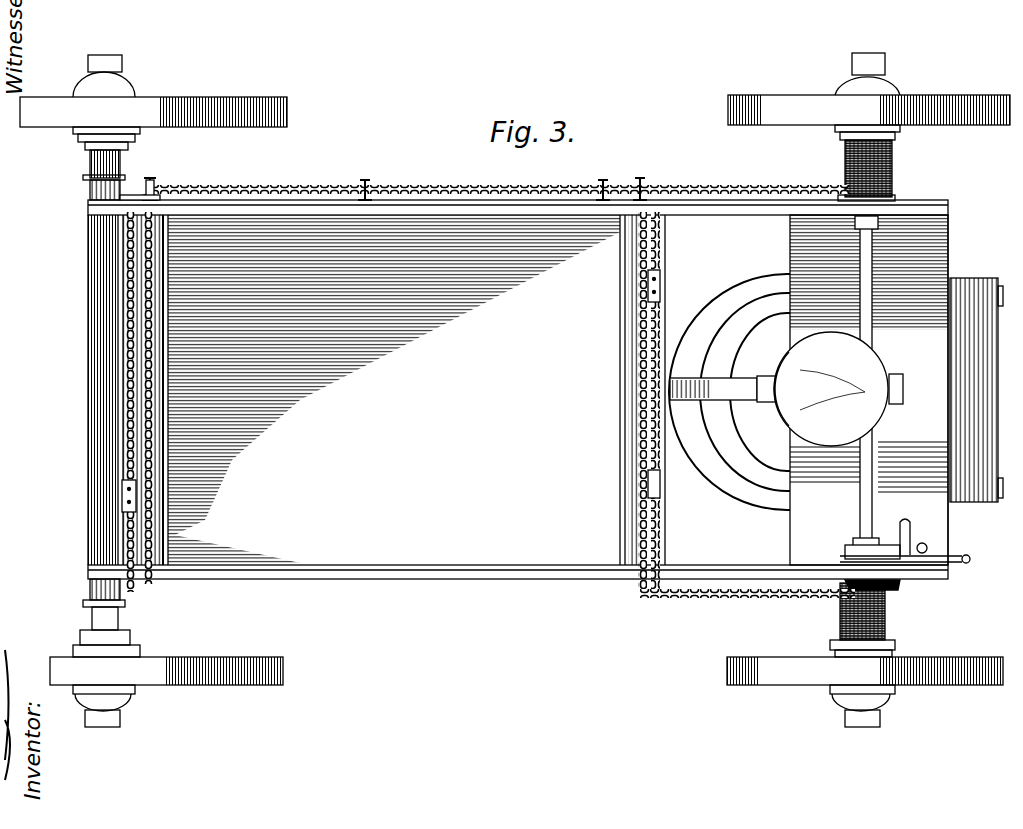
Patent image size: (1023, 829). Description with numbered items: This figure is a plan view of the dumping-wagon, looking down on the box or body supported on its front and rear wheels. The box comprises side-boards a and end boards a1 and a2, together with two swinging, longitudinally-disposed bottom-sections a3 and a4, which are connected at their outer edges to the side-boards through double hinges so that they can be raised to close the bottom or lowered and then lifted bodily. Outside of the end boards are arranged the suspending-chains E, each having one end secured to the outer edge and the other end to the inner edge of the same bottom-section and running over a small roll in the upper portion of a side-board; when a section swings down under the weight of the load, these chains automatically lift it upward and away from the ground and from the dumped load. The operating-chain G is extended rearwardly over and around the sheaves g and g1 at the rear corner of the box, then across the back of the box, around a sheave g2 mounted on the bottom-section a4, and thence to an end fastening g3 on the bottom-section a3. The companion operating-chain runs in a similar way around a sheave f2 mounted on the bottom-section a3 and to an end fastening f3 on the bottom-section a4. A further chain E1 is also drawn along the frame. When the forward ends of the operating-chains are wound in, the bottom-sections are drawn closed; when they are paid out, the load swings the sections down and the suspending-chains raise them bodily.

The side-boards a is at (402, 210).
The end board a1 is at (165, 370).
The end board a2 is at (621, 330).
The bottom-section a3 is at (394, 389).
The bottom-section a4 is at (455, 490).
The sheave g is at (153, 188).
The sheave g1 is at (140, 198).
The sheave g2 is at (136, 486).
The end fastening g3 is at (150, 306).
The operating-chain G is at (706, 186).
The suspending-chain E is at (757, 595).
The chain E1 is at (660, 518).
The sheave f2 is at (664, 298).
The end fastening f3 is at (660, 486).